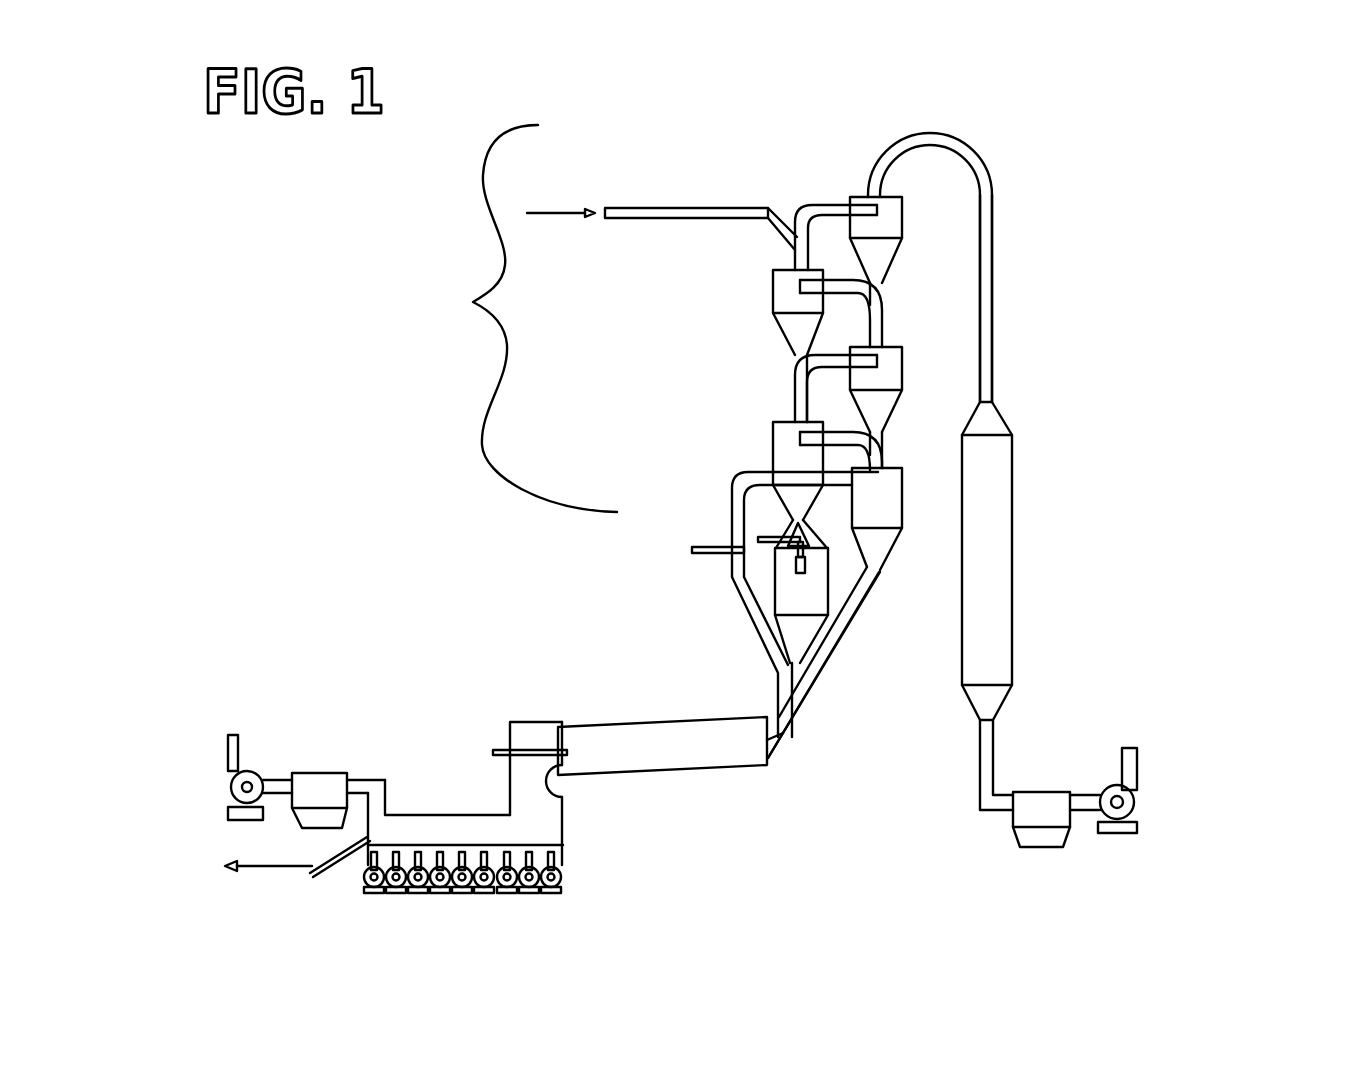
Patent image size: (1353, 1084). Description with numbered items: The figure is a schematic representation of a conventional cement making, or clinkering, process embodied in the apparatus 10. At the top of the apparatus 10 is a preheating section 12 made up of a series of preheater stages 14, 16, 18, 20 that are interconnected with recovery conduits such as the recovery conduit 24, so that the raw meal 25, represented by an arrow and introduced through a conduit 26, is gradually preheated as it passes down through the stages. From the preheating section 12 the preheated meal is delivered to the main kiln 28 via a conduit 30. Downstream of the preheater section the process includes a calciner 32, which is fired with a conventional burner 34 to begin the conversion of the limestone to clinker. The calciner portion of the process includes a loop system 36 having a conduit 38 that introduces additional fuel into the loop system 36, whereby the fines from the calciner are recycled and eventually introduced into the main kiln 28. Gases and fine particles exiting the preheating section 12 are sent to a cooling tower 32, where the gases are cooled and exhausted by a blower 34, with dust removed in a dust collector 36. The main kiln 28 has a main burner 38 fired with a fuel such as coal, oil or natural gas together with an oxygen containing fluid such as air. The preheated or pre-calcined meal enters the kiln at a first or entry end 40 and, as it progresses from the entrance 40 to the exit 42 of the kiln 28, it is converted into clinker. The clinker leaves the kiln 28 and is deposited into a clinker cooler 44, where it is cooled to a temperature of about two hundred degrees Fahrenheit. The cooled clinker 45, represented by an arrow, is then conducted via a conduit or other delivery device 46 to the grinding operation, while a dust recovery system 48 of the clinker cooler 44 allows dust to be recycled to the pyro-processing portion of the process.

The apparatus 10 is at (1037, 366).
The preheating section 12 is at (528, 318).
The preheater stage 14 is at (902, 230).
The preheater stage 16 is at (773, 290).
The preheater stage 18 is at (902, 376).
The preheater stage 20 is at (773, 434).
The recovery conduit 24 is at (817, 205).
The raw meal 25 is at (560, 212).
The conduit 26 is at (680, 208).
The main kiln 28 is at (628, 723).
The conduit 30 is at (800, 712).
The calciner / cooling tower 32 is at (1012, 468).
The burner / blower 34 is at (775, 537).
The loop system / dust collector 36 is at (746, 607).
The conduit / main burner 38 is at (720, 550).
The entry end 40 is at (780, 757).
The exit 42 is at (563, 790).
The clinker cooler 44 is at (567, 832).
The clinker 45 is at (262, 866).
The conduit or other delivery device 46 is at (335, 862).
The dust recovery system 48 is at (323, 773).